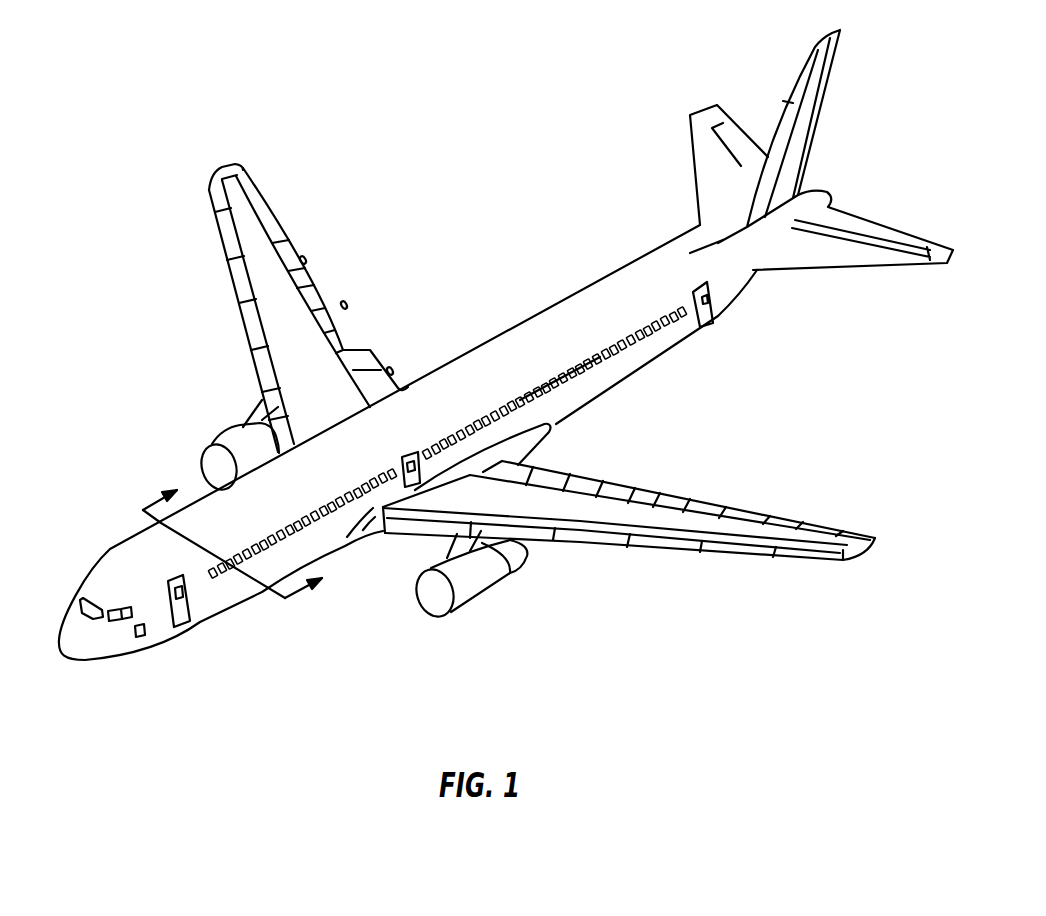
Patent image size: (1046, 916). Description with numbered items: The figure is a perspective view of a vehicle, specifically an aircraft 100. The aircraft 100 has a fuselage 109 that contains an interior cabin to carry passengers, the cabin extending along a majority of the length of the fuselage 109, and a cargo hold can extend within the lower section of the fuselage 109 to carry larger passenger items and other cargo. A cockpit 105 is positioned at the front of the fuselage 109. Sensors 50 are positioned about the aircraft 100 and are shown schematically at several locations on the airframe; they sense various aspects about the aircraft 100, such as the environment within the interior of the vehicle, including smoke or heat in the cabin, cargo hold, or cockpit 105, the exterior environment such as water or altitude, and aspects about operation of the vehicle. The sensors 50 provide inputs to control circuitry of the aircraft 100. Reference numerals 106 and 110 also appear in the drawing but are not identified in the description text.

The aircraft 100 is at (498, 356).
The cockpit 105 is at (107, 577).
The engine 106 is at (240, 430).
The fuselage 109 is at (593, 388).
The fuselage 110 is at (283, 480).
The sensors 50 is at (303, 248).